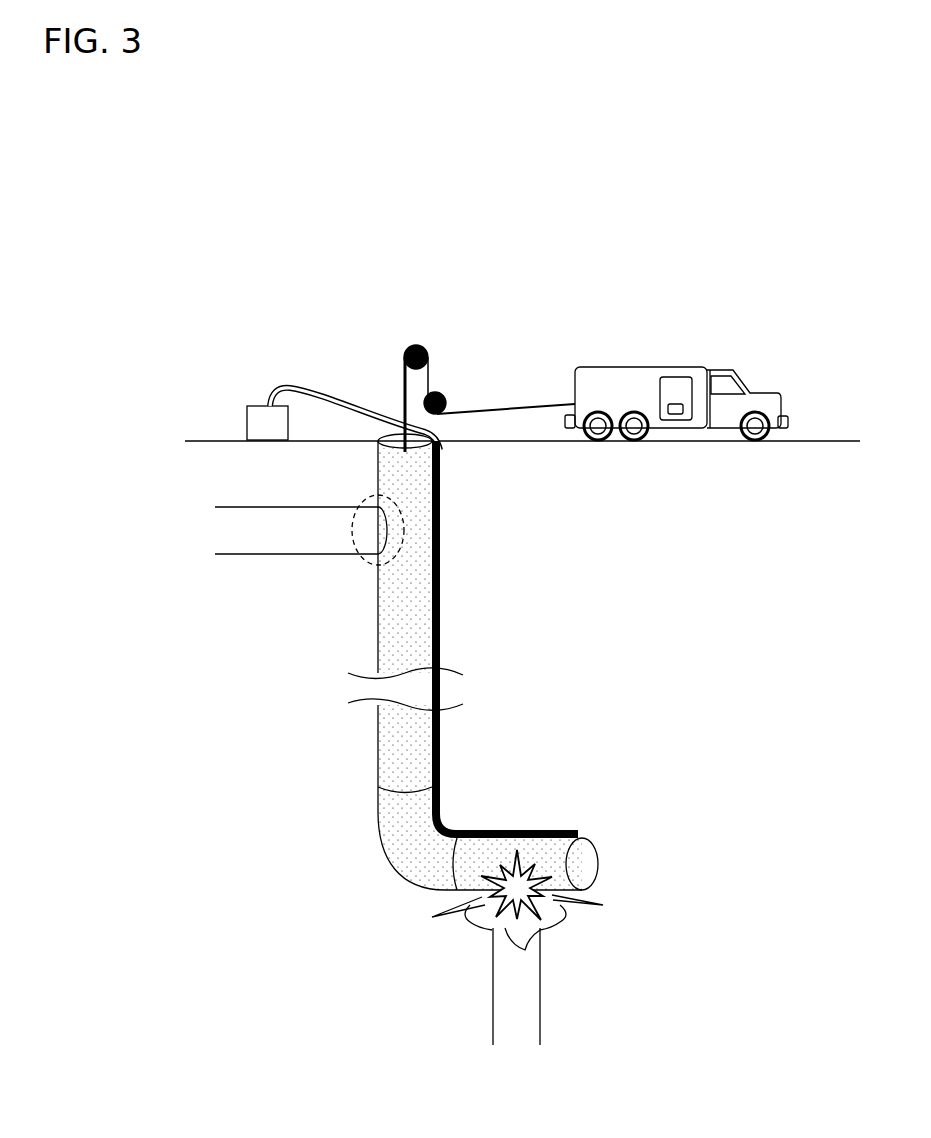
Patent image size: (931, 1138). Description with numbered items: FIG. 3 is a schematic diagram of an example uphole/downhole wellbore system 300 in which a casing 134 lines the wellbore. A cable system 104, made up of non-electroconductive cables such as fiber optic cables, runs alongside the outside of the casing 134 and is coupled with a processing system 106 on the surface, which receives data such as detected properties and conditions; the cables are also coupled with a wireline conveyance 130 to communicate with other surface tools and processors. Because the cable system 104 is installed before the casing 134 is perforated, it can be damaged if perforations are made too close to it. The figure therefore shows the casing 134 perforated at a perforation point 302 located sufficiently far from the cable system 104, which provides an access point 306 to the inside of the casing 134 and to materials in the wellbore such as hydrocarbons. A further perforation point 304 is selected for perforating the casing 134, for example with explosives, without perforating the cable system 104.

The wellbore system 300 is at (279, 243).
The processing system 106 is at (245, 418).
The wireline conveyance 130 is at (483, 410).
The cable system 104 is at (442, 560).
The access point 306 is at (263, 515).
The perforation point 302 is at (373, 494).
The casing 134 is at (620, 823).
The perforation point 304 is at (488, 921).